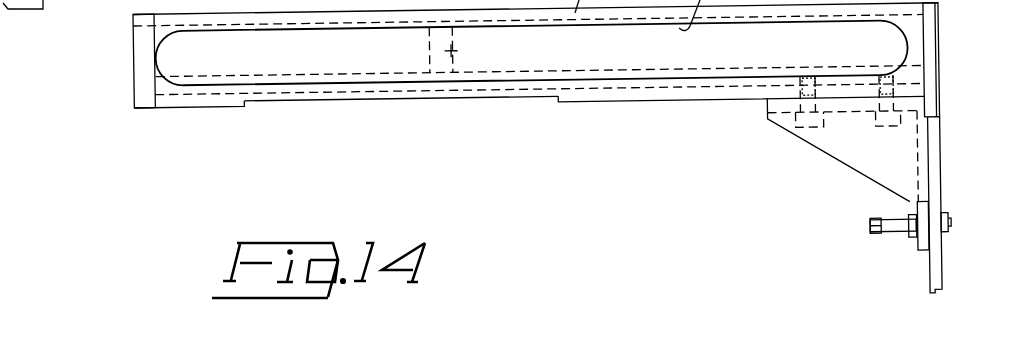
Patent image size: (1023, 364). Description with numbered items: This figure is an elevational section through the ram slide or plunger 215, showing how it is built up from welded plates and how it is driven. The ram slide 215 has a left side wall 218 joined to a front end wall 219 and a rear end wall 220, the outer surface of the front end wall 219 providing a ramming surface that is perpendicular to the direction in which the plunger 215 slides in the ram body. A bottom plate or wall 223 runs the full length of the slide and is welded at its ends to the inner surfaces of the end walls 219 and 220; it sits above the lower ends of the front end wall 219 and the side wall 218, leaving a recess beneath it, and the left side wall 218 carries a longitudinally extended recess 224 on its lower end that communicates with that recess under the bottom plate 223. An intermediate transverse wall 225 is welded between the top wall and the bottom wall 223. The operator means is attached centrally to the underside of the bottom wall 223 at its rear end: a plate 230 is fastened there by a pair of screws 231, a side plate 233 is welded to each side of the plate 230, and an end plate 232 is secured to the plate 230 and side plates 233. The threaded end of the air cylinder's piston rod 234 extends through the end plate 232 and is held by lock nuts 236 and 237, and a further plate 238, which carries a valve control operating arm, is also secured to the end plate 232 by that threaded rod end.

The ram slide or plunger 215 is at (131, 109).
The left side wall 218 is at (201, 101).
The front end wall 219 is at (137, 71).
The rear end wall 220 is at (933, 60).
The bottom plate or wall 223 is at (246, 78).
The longitudinally extended recess 224 is at (313, 101).
The intermediate transverse wall 225 is at (457, 51).
The plate 230 is at (770, 122).
The screws 231 is at (803, 125).
The end plate 232 is at (922, 158).
The side plate 233 is at (852, 157).
The piston rod 234 is at (880, 233).
The lock nut 236 is at (912, 237).
The lock nut 237 is at (945, 213).
The plate 238 is at (937, 272).